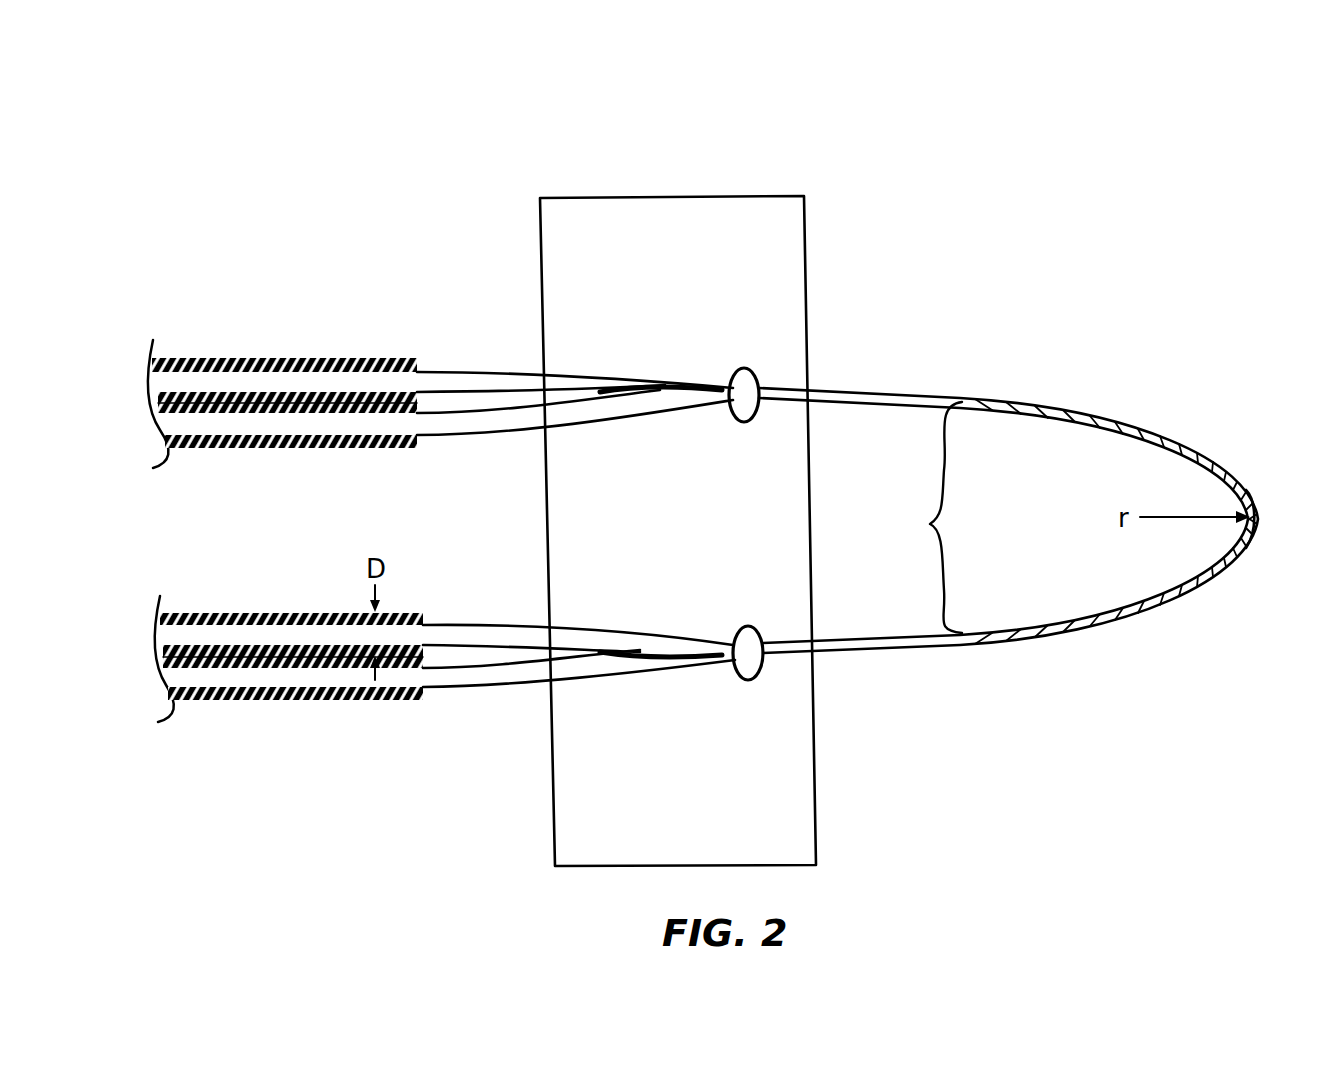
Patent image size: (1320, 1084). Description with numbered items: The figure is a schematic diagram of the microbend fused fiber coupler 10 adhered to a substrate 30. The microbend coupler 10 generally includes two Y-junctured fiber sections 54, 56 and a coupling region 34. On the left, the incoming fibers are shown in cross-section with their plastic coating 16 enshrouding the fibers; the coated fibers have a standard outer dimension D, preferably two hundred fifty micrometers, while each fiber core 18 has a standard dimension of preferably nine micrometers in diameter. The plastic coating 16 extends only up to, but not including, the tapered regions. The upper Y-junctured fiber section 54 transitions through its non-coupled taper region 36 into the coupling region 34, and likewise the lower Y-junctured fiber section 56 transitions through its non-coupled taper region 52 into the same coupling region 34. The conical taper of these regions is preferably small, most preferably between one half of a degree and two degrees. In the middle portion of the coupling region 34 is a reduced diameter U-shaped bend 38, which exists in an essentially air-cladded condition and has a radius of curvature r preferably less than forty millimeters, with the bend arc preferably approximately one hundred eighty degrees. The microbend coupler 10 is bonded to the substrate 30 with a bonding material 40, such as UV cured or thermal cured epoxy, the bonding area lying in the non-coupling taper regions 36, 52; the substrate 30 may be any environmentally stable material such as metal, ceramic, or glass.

The microbend coupler 10 is at (1226, 333).
The plastic coating 16 is at (345, 358).
The fiber core 18 is at (578, 632).
The substrate 30 is at (634, 503).
The coupling region 34 is at (919, 517).
The non-coupled taper region 36 is at (962, 230).
The U-shaped bend 38 is at (1262, 517).
The bonding material 40 is at (745, 368).
The non-coupled taper region 52 is at (983, 770).
The Y-junctured fiber section 54 is at (636, 369).
The Y-junctured fiber section 56 is at (636, 679).